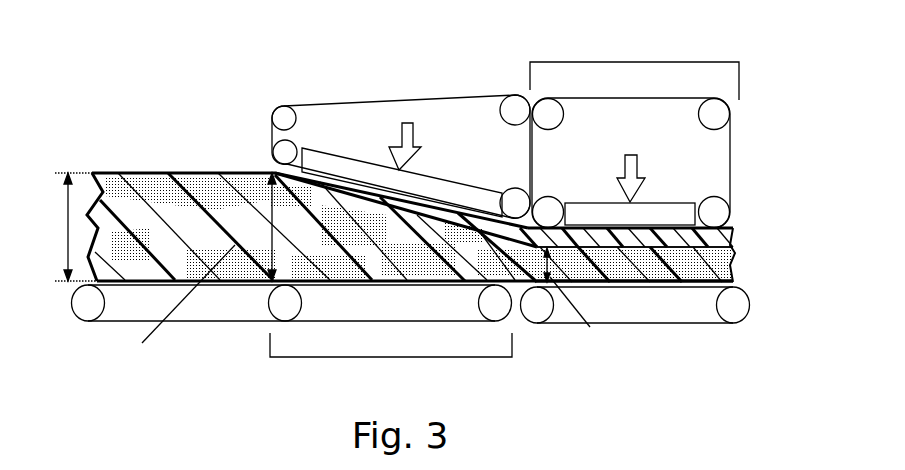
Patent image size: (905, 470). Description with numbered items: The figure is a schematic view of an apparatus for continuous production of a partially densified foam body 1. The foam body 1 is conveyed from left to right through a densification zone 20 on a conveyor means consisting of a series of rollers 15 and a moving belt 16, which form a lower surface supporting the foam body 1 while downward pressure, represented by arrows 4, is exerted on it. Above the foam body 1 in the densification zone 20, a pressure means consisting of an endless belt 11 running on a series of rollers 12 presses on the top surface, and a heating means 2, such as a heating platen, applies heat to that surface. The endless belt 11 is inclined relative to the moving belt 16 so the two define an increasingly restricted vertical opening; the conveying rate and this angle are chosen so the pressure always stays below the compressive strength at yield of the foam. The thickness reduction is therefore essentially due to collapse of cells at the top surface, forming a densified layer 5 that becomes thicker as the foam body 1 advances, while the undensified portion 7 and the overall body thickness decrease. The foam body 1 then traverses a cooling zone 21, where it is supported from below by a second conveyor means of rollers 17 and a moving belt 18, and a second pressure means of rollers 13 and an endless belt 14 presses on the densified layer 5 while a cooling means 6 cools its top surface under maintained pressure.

The foam body 1 is at (172, 173).
The heating means 2 is at (365, 160).
The arrows representing downward pressure 4 is at (414, 135).
The densified layer 5 is at (730, 230).
The cooling means 6 is at (667, 202).
The undensified portion 7 is at (733, 268).
The endless belt 11 is at (275, 135).
The rollers 12 is at (293, 107).
The rollers 13 is at (549, 128).
The endless belt 14 is at (653, 98).
The rollers 15 is at (88, 323).
The moving belt 16 is at (360, 321).
The rollers 17 is at (535, 325).
The moving belt 18 is at (658, 325).
The densification zone 20 is at (465, 359).
The cooling zone 21 is at (628, 62).